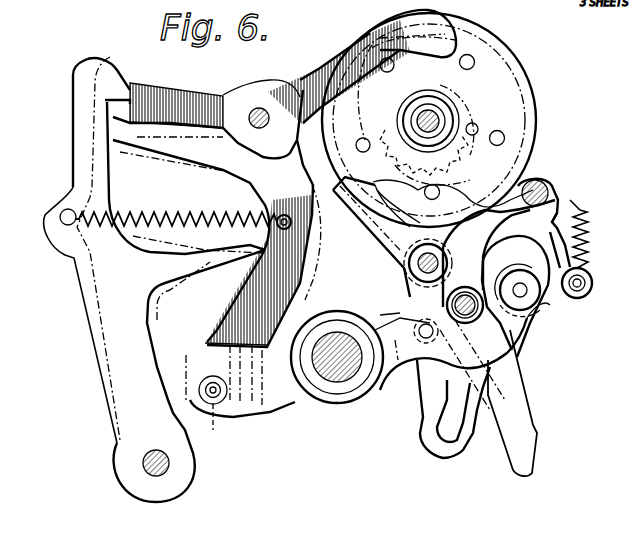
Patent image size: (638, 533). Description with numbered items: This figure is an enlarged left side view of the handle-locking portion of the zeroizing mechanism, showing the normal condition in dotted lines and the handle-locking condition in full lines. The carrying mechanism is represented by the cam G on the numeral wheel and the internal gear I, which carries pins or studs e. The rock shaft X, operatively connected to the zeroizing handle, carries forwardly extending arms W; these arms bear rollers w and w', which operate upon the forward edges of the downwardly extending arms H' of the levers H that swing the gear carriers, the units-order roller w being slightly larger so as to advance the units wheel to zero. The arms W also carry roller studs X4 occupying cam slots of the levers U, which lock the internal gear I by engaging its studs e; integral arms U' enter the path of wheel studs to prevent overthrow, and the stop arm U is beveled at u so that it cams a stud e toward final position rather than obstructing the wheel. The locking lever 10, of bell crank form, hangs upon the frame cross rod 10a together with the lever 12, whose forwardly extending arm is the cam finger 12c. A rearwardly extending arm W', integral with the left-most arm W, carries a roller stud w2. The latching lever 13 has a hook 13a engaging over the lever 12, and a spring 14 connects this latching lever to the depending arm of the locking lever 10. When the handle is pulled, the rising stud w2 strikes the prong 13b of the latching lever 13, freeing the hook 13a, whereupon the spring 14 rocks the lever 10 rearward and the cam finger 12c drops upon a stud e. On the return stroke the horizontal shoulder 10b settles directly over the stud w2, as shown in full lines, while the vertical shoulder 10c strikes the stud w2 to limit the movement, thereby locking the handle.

The latching lever 13 is at (93, 287).
The latch hook 13a is at (118, 90).
The prong 13b is at (207, 262).
The locking lever 10 is at (180, 152).
The frame cross rod 10a is at (261, 104).
The horizontal shoulder 10b is at (217, 340).
The vertical shoulder 10c is at (253, 360).
The lever 12 is at (207, 92).
The cam finger 12c is at (383, 43).
The cam G is at (517, 92).
The internal gear I is at (540, 123).
The pin or stud e is at (368, 138).
The beveled end u is at (361, 158).
The lever U is at (392, 237).
The arm U' is at (376, 229).
The rock shaft X is at (343, 380).
The roller stud X4 is at (430, 310).
The arm W is at (472, 318).
The rearwardly extending arm W' is at (258, 399).
The roller stud w2 is at (220, 422).
The roller w' is at (515, 296).
The roller w is at (548, 316).
The lever H is at (570, 241).
The downwardly extending arm H' is at (531, 403).
The spring 14 is at (200, 200).